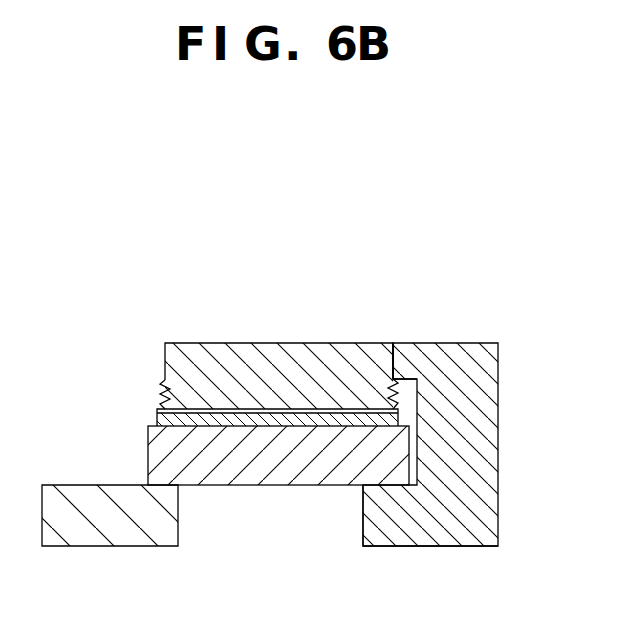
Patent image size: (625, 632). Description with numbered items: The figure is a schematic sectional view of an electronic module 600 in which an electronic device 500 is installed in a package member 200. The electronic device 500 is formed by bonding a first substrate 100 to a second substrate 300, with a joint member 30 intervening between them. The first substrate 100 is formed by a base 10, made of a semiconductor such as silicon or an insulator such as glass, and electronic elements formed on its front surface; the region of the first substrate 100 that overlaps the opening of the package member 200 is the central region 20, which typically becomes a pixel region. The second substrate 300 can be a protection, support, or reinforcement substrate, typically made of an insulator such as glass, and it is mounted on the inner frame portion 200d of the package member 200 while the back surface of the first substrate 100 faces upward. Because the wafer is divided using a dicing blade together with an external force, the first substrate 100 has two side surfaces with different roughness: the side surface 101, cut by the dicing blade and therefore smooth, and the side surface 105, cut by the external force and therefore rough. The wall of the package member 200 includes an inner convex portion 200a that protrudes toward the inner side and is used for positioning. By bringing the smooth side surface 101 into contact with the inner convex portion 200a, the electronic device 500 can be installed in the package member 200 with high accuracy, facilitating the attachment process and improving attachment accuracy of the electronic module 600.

The electronic module 600 is at (58, 177).
The electronic device 500 is at (418, 227).
The first substrate 100 is at (228, 277).
The base 10 is at (241, 377).
The central region 20 is at (312, 408).
The joint member 30 is at (182, 418).
The second substrate 300 is at (363, 460).
The package member 200 is at (111, 515).
The inner convex portion 200a is at (405, 357).
The inner frame portion 200d is at (383, 512).
The side surface 101 is at (395, 355).
The side surface 105 is at (395, 393).